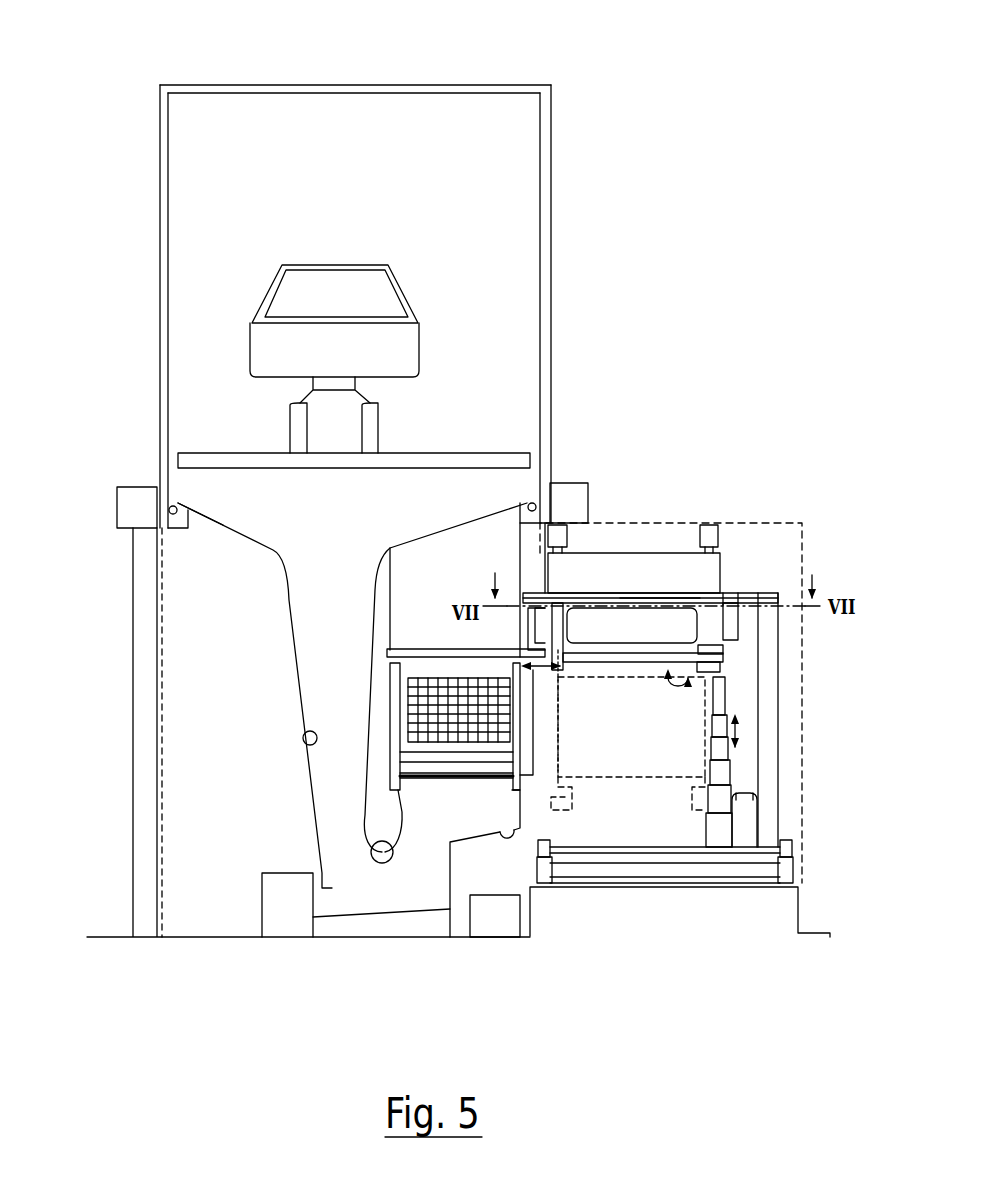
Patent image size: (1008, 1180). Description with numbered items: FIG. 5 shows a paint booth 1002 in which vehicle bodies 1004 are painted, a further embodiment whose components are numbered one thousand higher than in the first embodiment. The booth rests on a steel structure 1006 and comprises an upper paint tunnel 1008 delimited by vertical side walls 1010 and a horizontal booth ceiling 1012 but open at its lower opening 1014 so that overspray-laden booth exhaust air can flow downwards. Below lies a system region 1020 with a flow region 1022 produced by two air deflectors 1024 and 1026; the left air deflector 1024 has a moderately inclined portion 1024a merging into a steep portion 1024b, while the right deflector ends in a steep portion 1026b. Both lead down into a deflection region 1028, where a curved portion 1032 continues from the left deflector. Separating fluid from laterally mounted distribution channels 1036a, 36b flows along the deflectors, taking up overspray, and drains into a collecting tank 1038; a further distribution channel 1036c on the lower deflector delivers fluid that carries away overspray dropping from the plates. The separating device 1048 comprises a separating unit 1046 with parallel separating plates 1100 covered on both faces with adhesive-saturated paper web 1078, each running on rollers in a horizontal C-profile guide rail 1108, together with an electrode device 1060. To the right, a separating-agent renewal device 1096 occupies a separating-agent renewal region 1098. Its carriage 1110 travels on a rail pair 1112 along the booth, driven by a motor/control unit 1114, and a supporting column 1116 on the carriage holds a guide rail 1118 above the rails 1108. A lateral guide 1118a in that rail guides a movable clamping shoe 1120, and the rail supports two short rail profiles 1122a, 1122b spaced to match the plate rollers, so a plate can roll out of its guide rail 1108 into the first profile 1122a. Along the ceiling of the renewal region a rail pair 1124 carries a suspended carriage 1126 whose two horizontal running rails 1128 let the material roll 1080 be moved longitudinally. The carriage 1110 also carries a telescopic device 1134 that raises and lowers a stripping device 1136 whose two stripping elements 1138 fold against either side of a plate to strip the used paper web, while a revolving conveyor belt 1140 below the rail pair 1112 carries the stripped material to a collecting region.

The paint booth 1002 is at (572, 132).
The vehicle body 1004 is at (306, 264).
The steel structure 1006 is at (123, 534).
The paint tunnel 1008 is at (474, 190).
The side wall 1010 is at (165, 238).
The booth ceiling 1012 is at (398, 50).
The lower opening 1014 is at (160, 432).
The system region 1020 is at (188, 698).
The flow region 1022 is at (330, 609).
The left air deflector 1024 is at (292, 580).
The portion of left air deflector 1024a is at (268, 501).
The steep portion of left air deflector 1024b is at (303, 740).
The right air deflector 1026 is at (370, 682).
The steep portion of right air deflector 1026b is at (366, 740).
The deflection region 1028 is at (357, 894).
The curved portion 1032 is at (370, 848).
The distribution channel 1036a is at (178, 522).
The distribution channel 1036c is at (505, 845).
The collecting tank 1038 is at (280, 938).
The separating unit 1046 is at (432, 782).
The separating device 1048 is at (428, 626).
The electrode device 1060 is at (475, 782).
The paper web 1078 is at (366, 798).
The material roll 1080 is at (646, 631).
The separating-agent renewal device 1096 is at (754, 486).
The separating-agent renewal region 1098 is at (782, 557).
The separating plate 1100 is at (464, 672).
The guide rail 1108 is at (407, 651).
The carriage 1110 is at (590, 858).
The rail pair 1112 is at (794, 853).
The motor/control unit 1114 is at (747, 836).
The supporting column 1116 is at (768, 716).
The guide rail 1118 is at (663, 596).
The lateral guide 1118a is at (630, 596).
The clamping shoe 1120 is at (545, 682).
The first rail profile 1122a is at (548, 628).
The second rail profile 1122b is at (712, 648).
The rail pair 1124 is at (556, 534).
The suspended carriage 1126 is at (698, 580).
The running rail 1128 is at (602, 628).
The telescopic device 1134 is at (718, 836).
The stripping device 1136 is at (635, 778).
The stripping element 1138 is at (716, 690).
The conveyor belt 1140 is at (638, 882).
The distribution channel 36b is at (545, 519).